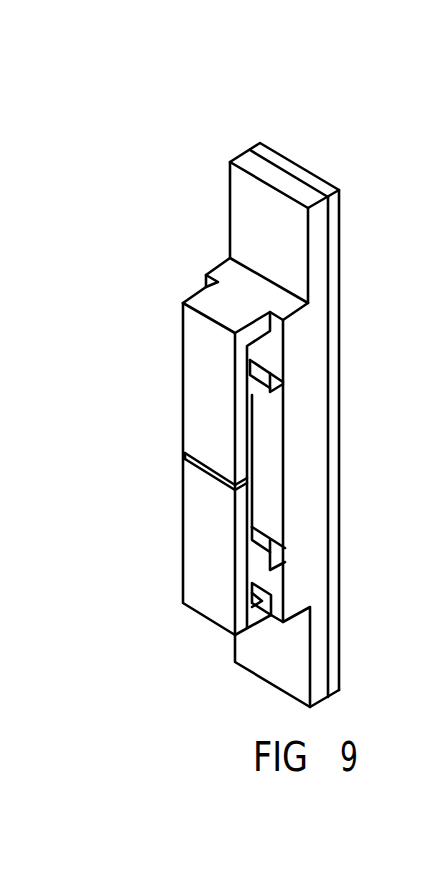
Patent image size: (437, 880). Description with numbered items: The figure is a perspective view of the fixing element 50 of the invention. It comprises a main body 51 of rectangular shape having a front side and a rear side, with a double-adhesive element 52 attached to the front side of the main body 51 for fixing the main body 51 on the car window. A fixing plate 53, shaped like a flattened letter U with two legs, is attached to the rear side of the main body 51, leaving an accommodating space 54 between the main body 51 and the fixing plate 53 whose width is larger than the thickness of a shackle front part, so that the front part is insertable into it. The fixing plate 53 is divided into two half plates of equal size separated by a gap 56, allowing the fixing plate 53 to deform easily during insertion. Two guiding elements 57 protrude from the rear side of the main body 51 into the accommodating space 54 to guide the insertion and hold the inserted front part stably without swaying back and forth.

The slide assembly 50 is at (178, 251).
The main body 51 is at (317, 288).
The double-adhesive element 52 is at (308, 180).
The fixing plate 53 is at (207, 412).
The accommodating space 54 is at (272, 482).
The gap 56 is at (199, 471).
The guiding elements 57 is at (270, 382).